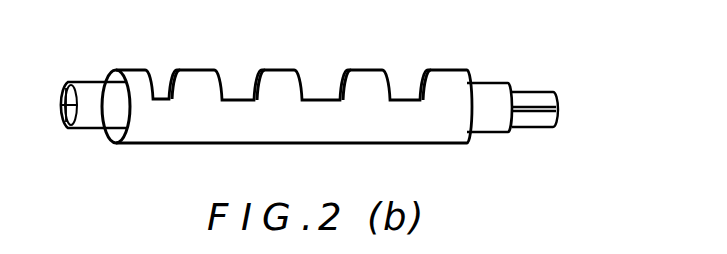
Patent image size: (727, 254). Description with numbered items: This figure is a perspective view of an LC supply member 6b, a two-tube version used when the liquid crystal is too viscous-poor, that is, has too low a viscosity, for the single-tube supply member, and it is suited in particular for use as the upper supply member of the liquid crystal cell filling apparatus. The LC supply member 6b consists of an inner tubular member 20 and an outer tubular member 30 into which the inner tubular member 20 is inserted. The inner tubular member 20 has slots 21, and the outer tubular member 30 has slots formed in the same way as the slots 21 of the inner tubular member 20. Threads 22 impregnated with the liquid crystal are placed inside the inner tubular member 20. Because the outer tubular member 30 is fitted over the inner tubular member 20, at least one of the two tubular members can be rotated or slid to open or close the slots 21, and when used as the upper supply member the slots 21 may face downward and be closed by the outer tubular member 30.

The LC supply member 6b is at (297, 101).
The outer tubular member 30 is at (290, 120).
The slots 21 is at (266, 56).
The inner tubular member 20 is at (495, 108).
The threads 22 is at (547, 98).